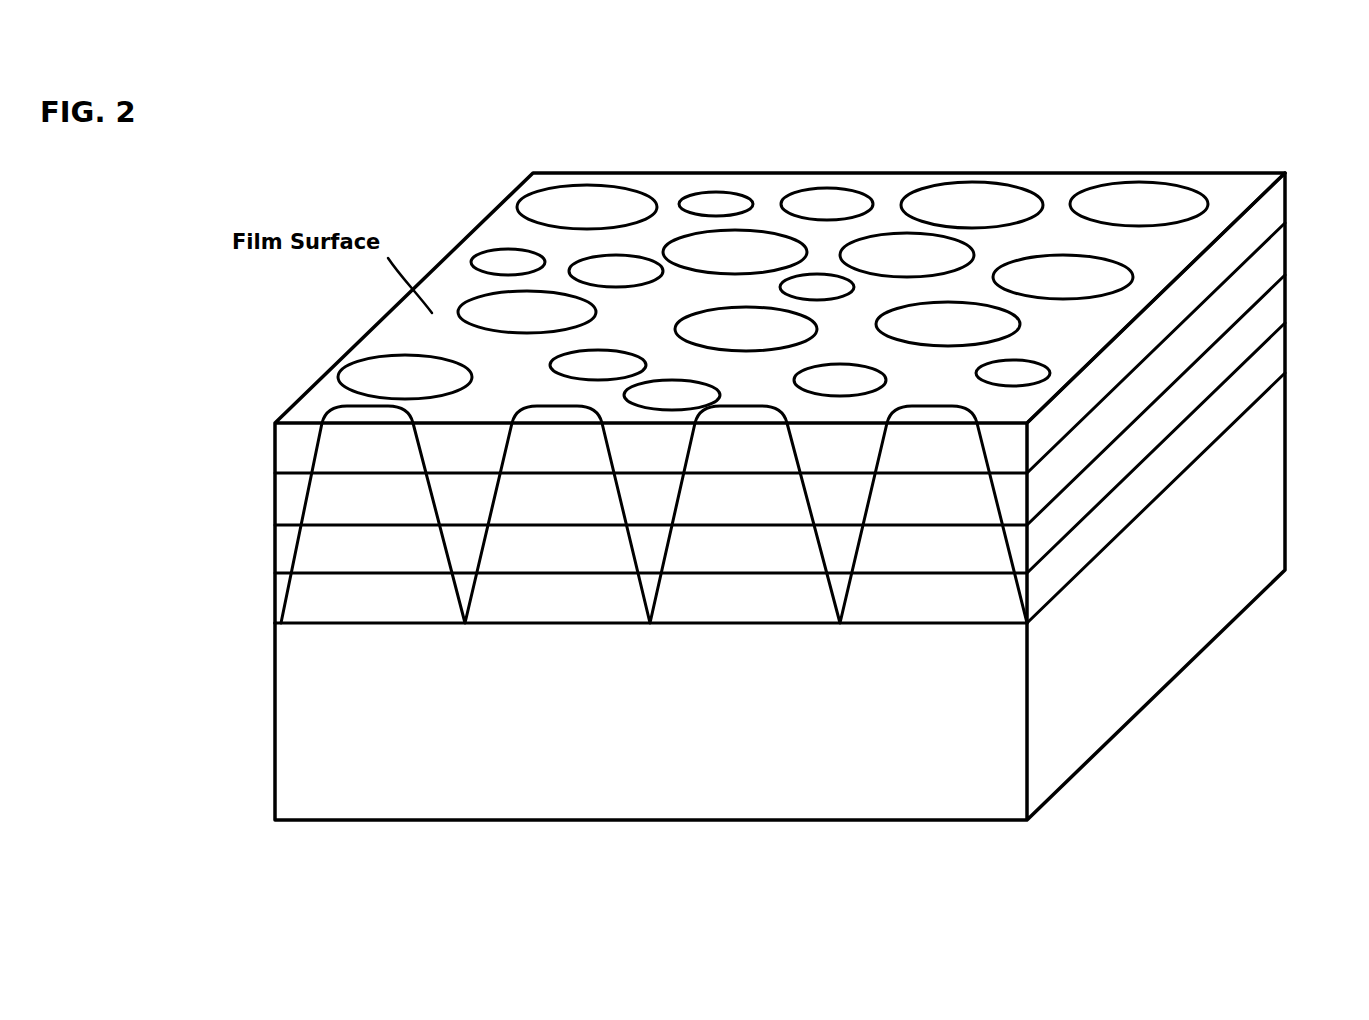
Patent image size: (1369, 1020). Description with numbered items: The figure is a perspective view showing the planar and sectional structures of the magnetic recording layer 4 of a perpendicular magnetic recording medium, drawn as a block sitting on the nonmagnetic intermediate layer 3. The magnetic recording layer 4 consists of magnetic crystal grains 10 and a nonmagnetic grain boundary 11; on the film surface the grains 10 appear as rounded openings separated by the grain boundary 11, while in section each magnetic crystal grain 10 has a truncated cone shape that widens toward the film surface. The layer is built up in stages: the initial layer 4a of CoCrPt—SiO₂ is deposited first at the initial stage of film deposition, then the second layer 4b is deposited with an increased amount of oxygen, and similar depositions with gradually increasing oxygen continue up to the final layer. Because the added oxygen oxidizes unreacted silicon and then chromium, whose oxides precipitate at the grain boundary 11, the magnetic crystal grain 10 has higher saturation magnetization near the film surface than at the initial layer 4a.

The nonmagnetic intermediate layer 3 is at (1287, 462).
The magnetic recording layer 4 is at (1287, 302).
The initial layer 4a is at (284, 603).
The second layer 4b is at (313, 458).
The magnetic crystal grain 10 is at (824, 190).
The nonmagnetic grain boundary 11 is at (1060, 190).